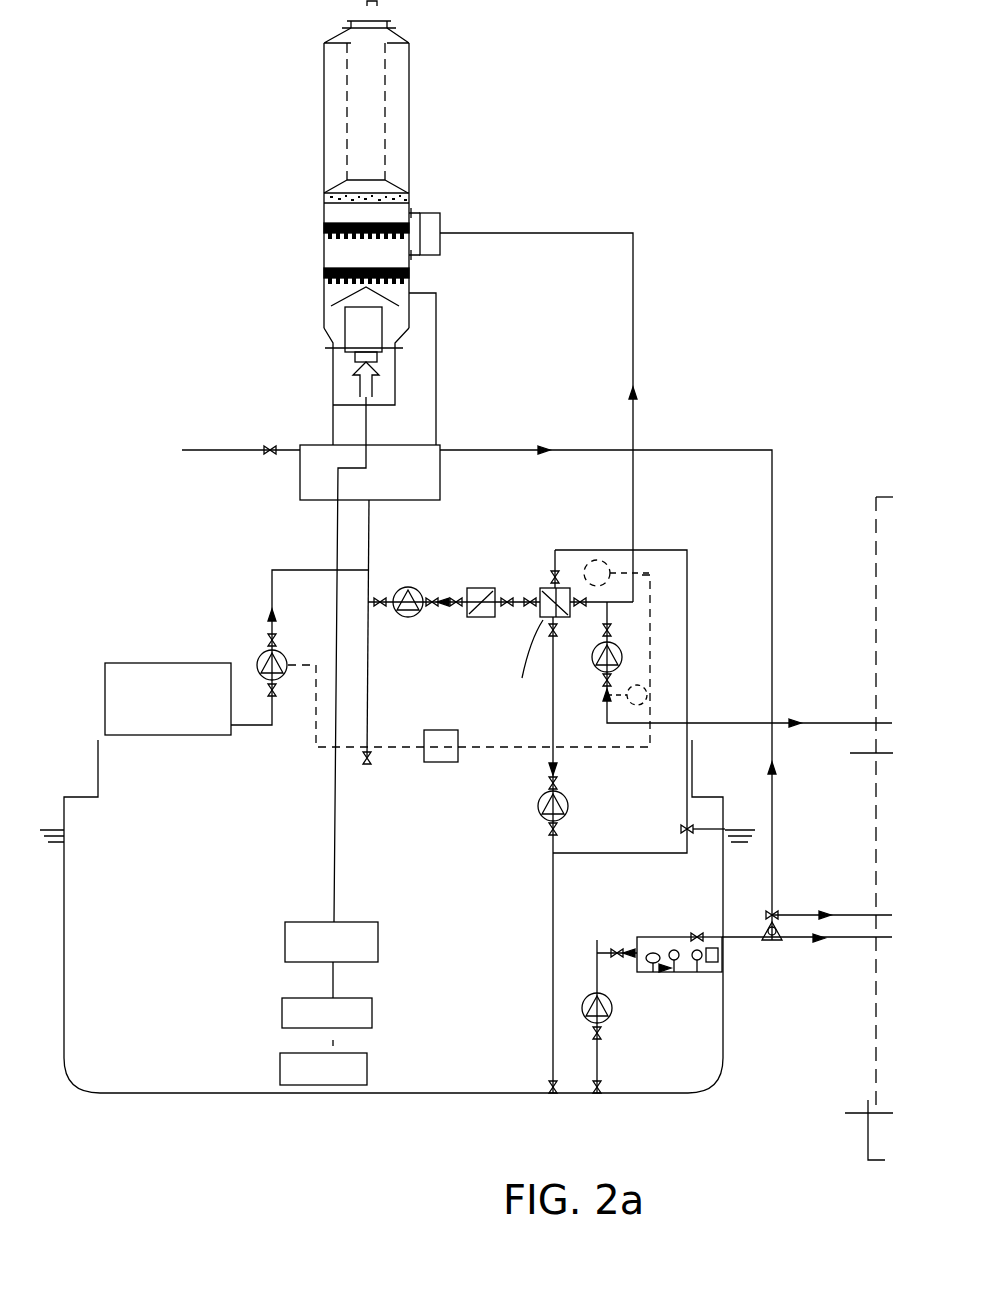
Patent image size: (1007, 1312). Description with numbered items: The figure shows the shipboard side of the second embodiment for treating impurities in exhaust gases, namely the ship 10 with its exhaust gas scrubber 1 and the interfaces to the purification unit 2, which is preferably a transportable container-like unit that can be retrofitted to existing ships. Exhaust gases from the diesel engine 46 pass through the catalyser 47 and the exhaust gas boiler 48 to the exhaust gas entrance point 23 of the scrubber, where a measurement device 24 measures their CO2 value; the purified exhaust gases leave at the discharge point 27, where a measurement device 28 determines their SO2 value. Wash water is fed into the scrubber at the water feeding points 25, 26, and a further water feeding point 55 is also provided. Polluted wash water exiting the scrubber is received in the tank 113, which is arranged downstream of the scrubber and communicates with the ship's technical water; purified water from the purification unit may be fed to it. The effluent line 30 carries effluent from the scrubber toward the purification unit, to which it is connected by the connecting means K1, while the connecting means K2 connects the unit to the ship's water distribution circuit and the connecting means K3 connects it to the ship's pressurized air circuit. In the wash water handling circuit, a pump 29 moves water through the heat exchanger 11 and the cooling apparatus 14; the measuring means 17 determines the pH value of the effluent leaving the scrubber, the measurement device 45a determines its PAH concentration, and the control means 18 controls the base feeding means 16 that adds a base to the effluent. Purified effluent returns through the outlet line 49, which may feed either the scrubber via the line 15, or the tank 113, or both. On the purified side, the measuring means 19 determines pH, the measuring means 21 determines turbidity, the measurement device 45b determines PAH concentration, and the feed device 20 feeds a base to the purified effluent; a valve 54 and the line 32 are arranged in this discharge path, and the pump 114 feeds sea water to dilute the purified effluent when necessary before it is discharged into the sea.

The exhaust gas scrubber 1 is at (386, 461).
The purification unit 2 is at (880, 497).
The ship 10 is at (435, 1095).
The heat exchanger 11 is at (548, 590).
The cooling apparatus 14 is at (560, 575).
The line 15 is at (497, 233).
The base feeding means 16 is at (163, 663).
The measuring means for determining pH value of effluent 17 is at (604, 560).
The control means 18 is at (437, 762).
The measuring means for determining pH value of purified effluent 19 is at (650, 972).
The feed device 20 is at (718, 955).
The measuring means for determining turbidity of purified water 21 is at (722, 1046).
The exhaust gas entrance point 23 is at (335, 356).
The measurement device for measuring CO2 value of exhaust gases 24 is at (355, 357).
The water feeding point 25 is at (413, 203).
The water feeding point 26 is at (410, 262).
The discharge point of purified exhaust gases 27 is at (368, 16).
The measurement device for determining SO2 value of exhaust gases 28 is at (348, 27).
The pump 29 is at (415, 587).
The effluent line 30 is at (817, 723).
The line 32 is at (800, 940).
The measurement device for determining PAH concentration 45a is at (647, 694).
The measurement device for determining PAH concentration 45b is at (705, 972).
The diesel engine 46 is at (280, 1068).
The catalyser 47 is at (292, 1013).
The exhaust gas boiler 48 is at (295, 940).
The outlet line 49 is at (775, 500).
The valve 54 is at (717, 975).
The water feeding point 55 is at (510, 676).
The tank 113 is at (305, 485).
The pump 114 is at (588, 998).
The connecting means K1 is at (873, 722).
The connecting means K2 is at (872, 753).
The connecting means K3 is at (865, 1115).